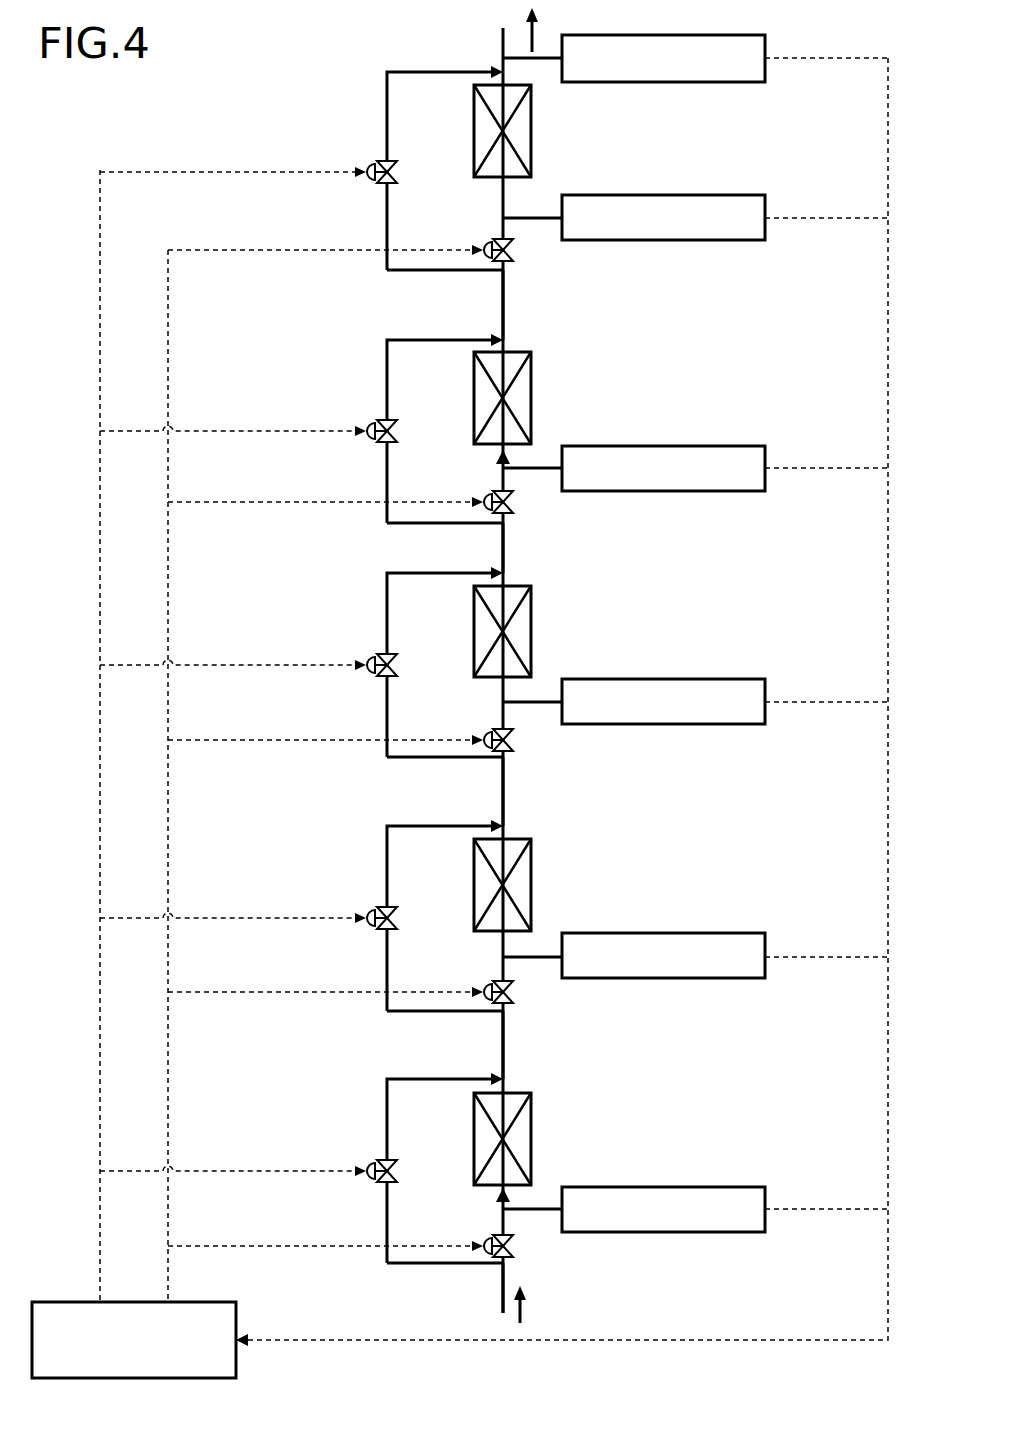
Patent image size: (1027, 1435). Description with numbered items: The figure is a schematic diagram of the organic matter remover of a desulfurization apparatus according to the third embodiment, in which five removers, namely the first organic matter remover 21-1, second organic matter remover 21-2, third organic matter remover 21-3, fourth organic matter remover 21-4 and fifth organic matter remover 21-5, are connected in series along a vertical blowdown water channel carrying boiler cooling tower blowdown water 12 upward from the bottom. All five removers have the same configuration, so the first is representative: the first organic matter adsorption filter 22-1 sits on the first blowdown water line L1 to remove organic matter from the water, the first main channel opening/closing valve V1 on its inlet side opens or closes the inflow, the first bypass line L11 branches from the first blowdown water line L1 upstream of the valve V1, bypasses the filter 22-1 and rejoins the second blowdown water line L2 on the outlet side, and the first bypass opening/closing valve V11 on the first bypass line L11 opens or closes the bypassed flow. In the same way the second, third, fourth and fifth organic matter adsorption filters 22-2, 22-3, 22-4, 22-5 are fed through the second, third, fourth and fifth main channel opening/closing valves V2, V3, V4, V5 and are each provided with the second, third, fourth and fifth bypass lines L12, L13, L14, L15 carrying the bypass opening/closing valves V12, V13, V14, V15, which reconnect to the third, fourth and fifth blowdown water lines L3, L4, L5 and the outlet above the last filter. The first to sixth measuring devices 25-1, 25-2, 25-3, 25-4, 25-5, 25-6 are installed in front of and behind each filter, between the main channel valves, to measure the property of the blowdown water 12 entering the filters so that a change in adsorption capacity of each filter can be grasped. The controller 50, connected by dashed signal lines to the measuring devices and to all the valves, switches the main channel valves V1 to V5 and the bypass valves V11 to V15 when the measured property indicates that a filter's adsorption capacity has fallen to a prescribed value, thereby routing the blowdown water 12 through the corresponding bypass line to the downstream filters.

The boiler cooling tower blowdown water 12 is at (523, 1310).
The controller 50 is at (202, 1302).
The first organic matter remover 21-1 is at (744, 1133).
The second organic matter remover 21-2 is at (744, 881).
The third organic matter remover 21-3 is at (744, 627).
The fourth organic matter remover 21-4 is at (744, 395).
The fifth organic matter remover 21-5 is at (744, 126).
The first organic matter adsorption filter 22-1 is at (531, 1119).
The second organic matter adsorption filter 22-2 is at (531, 864).
The third organic matter adsorption filter 22-3 is at (531, 612).
The fourth organic matter adsorption filter 22-4 is at (531, 377).
The fifth organic matter adsorption filter 22-5 is at (531, 110).
The first measuring device 25-1 is at (733, 1187).
The second measuring device 25-2 is at (733, 933).
The third measuring device 25-3 is at (733, 679).
The fourth measuring device 25-4 is at (733, 447).
The fifth measuring device 25-5 is at (733, 196).
The sixth measuring device 25-6 is at (733, 36).
The first main channel opening/closing valve V1 is at (513, 1246).
The second main channel opening/closing valve V2 is at (513, 992).
The third main channel opening/closing valve V3 is at (513, 740).
The fourth main channel opening/closing valve V4 is at (513, 502).
The fifth main channel opening/closing valve V5 is at (513, 250).
The first bypass opening/closing valve V11 is at (380, 1162).
The second bypass opening/closing valve V12 is at (380, 909).
The third bypass opening/closing valve V13 is at (380, 656).
The fourth bypass opening/closing valve V14 is at (380, 422).
The fifth bypass opening/closing valve V15 is at (380, 163).
The first blowdown water line L1 is at (503, 1273).
The second blowdown water line L2 is at (503, 1045).
The third blowdown water line L3 is at (503, 795).
The fourth blowdown water line L4 is at (503, 541).
The fifth blowdown water line L5 is at (503, 308).
The first bypass line L11 is at (387, 1202).
The second bypass line L12 is at (387, 949).
The third bypass line L13 is at (387, 697).
The fourth bypass line L14 is at (387, 460).
The fifth bypass line L15 is at (387, 205).